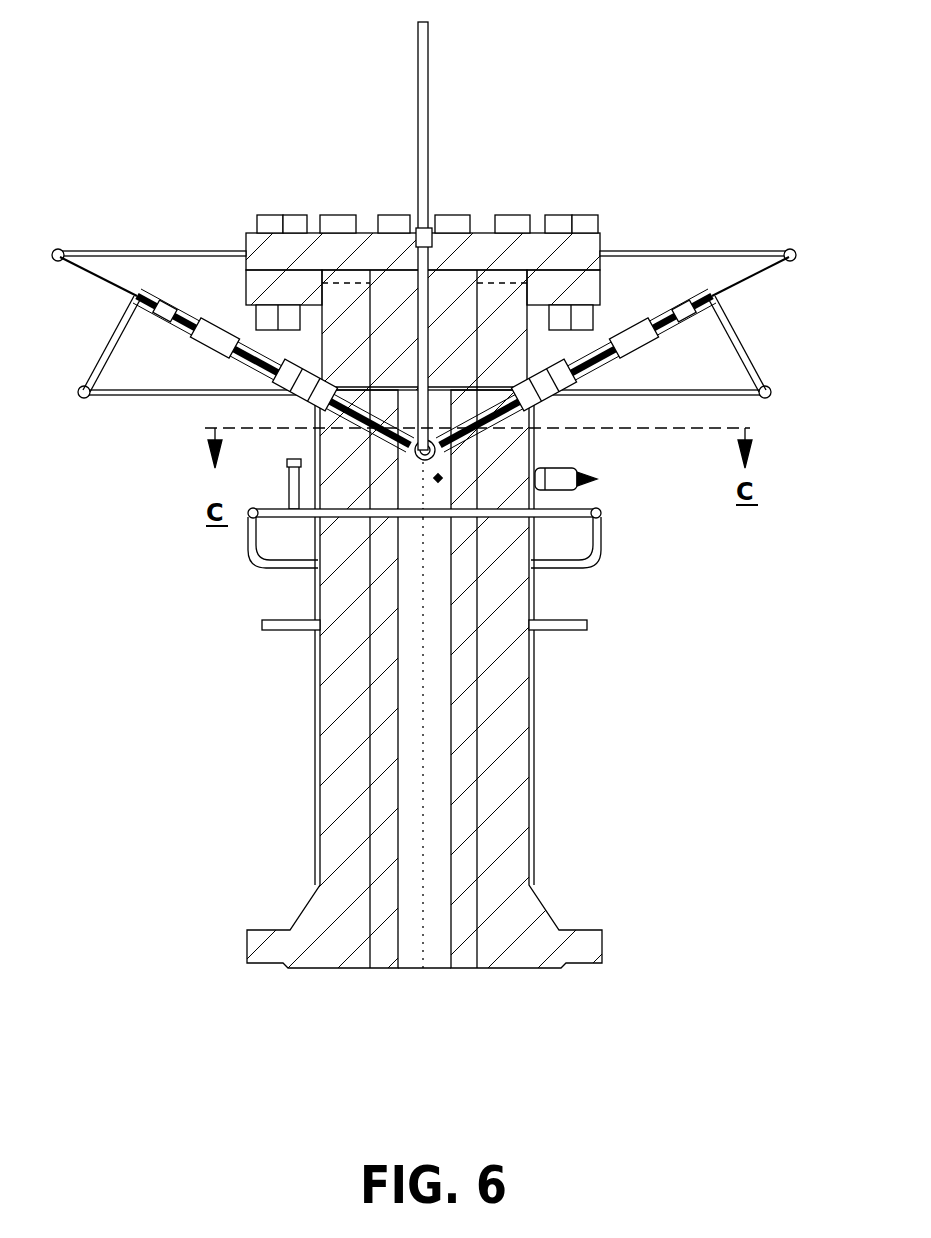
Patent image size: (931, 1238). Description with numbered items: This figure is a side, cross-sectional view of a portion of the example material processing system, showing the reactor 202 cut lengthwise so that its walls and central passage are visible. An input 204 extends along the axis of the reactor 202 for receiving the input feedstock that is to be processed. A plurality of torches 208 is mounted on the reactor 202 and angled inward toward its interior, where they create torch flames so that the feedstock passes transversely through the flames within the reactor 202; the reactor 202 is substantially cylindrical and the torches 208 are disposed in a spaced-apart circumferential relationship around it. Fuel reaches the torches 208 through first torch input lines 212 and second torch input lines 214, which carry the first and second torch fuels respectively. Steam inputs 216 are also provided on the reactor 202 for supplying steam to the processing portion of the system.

The reactor 202 is at (318, 680).
The input 204 is at (418, 88).
The torches 208 is at (285, 405).
The first torch input lines 212 is at (125, 251).
The second torch input lines 214 is at (107, 347).
The steam inputs 216 is at (253, 509).